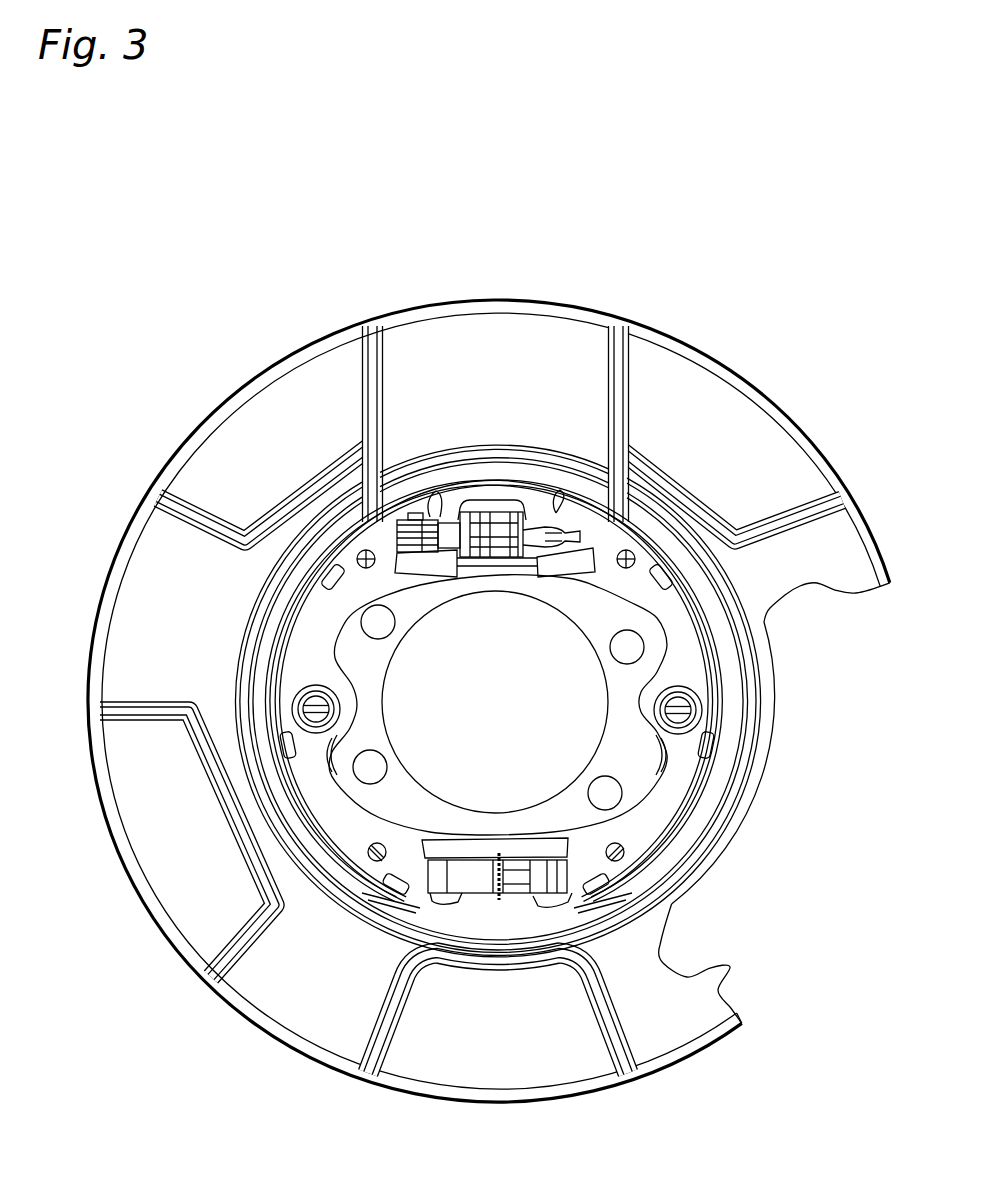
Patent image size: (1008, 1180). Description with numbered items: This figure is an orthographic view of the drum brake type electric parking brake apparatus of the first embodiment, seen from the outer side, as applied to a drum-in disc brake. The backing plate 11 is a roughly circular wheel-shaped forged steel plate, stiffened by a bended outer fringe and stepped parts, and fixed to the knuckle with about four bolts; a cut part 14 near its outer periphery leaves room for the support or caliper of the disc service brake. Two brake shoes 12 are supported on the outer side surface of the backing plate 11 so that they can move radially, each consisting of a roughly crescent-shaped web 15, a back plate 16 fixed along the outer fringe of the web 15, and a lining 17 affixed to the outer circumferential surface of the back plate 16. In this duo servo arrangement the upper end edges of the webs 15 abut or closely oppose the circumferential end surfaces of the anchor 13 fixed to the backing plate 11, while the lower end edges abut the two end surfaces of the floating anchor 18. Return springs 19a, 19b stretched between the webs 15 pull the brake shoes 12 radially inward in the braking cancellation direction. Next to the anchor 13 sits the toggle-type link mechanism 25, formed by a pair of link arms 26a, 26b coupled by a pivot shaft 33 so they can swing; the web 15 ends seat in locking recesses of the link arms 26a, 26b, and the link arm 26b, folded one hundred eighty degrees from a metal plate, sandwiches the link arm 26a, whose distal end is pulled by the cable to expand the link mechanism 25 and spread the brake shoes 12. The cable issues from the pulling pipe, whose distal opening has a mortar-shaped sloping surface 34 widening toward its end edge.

The backing plate 11 is at (673, 422).
The brake shoe 12 is at (277, 673).
The anchor 13 is at (522, 515).
The cut part 14 is at (735, 975).
The web 15 is at (680, 632).
The back plate 16 is at (700, 781).
The lining 17 is at (698, 802).
The floating anchor 18 is at (473, 862).
The return spring 19a is at (676, 497).
The return spring 19b is at (528, 850).
The link mechanism 25 is at (450, 514).
The link arm 26a is at (422, 517).
The link arm 26b is at (570, 531).
The pivot shaft 33 is at (429, 514).
The mortar-shaped sloping surface 34 is at (500, 510).